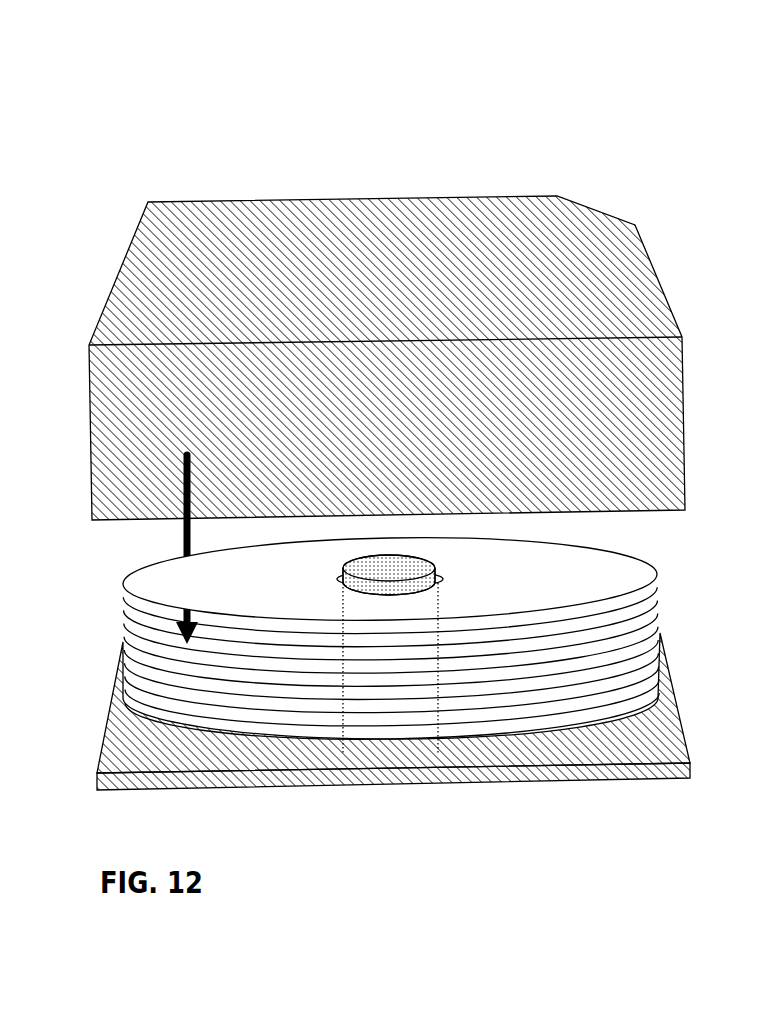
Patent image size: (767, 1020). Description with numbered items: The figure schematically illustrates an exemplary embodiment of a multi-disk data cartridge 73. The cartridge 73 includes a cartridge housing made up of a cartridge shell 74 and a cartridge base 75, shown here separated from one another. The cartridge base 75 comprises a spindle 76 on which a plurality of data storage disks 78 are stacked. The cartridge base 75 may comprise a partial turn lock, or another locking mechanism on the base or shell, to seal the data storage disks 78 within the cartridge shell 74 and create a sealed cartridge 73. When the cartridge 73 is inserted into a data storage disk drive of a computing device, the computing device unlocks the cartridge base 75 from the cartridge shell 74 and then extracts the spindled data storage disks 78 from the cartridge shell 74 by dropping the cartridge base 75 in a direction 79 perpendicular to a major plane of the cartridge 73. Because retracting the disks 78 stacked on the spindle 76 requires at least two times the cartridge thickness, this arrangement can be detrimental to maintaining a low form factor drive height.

The multi-disk data cartridge 73 is at (270, 126).
The cartridge shell 74 is at (400, 224).
The cartridge base 75 is at (657, 747).
The spindle 76 is at (447, 559).
The data storage disks 78 is at (682, 618).
The direction 79 is at (180, 527).